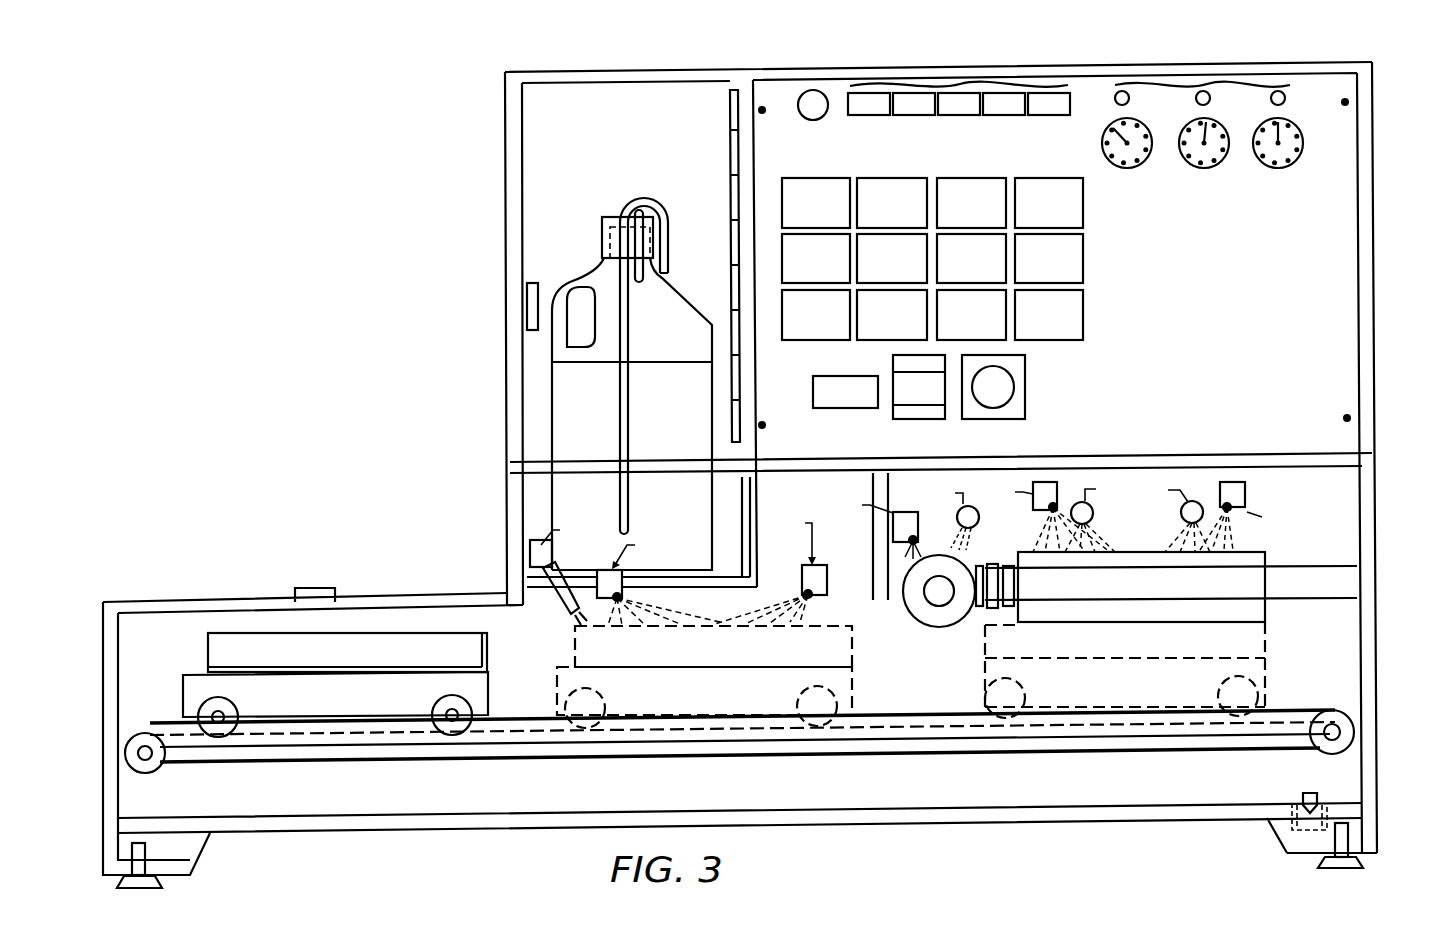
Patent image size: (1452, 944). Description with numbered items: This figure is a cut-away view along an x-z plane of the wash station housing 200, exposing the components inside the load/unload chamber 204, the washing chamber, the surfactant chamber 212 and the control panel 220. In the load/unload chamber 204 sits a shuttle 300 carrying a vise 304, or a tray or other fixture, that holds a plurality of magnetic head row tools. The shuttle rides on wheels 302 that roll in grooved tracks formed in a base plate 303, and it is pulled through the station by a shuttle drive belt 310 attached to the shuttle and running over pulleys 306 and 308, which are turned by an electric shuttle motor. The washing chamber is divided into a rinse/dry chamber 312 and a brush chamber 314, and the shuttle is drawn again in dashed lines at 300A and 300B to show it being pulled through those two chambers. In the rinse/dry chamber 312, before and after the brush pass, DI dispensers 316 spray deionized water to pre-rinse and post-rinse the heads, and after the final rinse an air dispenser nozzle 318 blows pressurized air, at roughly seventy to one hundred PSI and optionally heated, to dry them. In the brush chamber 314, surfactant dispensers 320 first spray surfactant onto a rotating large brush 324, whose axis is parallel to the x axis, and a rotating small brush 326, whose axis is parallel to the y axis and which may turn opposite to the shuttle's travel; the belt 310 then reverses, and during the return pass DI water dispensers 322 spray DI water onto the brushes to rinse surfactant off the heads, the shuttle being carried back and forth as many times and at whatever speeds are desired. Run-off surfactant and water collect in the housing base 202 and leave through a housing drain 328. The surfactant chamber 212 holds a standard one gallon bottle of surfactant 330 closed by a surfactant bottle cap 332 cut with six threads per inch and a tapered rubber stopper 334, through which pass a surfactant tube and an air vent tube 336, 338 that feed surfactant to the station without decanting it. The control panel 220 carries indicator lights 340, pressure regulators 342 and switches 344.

The wash station housing 200 is at (940, 840).
The wash station housing base 202 is at (1357, 808).
The load/unload chamber 204 is at (173, 622).
The surfactant chamber 212 is at (588, 100).
The control panel 220 is at (1313, 88).
The shuttle 300 is at (200, 685).
The shuttle in rinse/dry chamber 300A is at (722, 705).
The shuttle in brush chamber 300B is at (1139, 702).
The wheels 302 is at (430, 708).
The base plate 303 is at (410, 740).
The vise 304 is at (375, 643).
The pulley 306 is at (145, 768).
The pulley 308 is at (1332, 752).
The shuttle drive belt 310 is at (333, 765).
The rinse/dry chamber 312 is at (842, 599).
The brush chamber 314 is at (909, 490).
The DI dispensers 316 is at (800, 582).
The air dispenser nozzle 318 is at (530, 543).
The surfactant dispensers 320 is at (973, 528).
The DI water dispensers 322 is at (917, 510).
The large brush 324 is at (1258, 560).
The small brush 326 is at (945, 617).
The housing drain 328 is at (1305, 823).
The bottle of surfactant 330 is at (563, 407).
The surfactant bottle cap 332 is at (600, 222).
The rubber stopper 334 is at (610, 247).
The inner tube 336 is at (633, 197).
The surfactant tube 338 is at (665, 210).
The indicator lights 340 is at (957, 84).
The pressure regulators 342 is at (1207, 84).
The switches 344 is at (1106, 277).